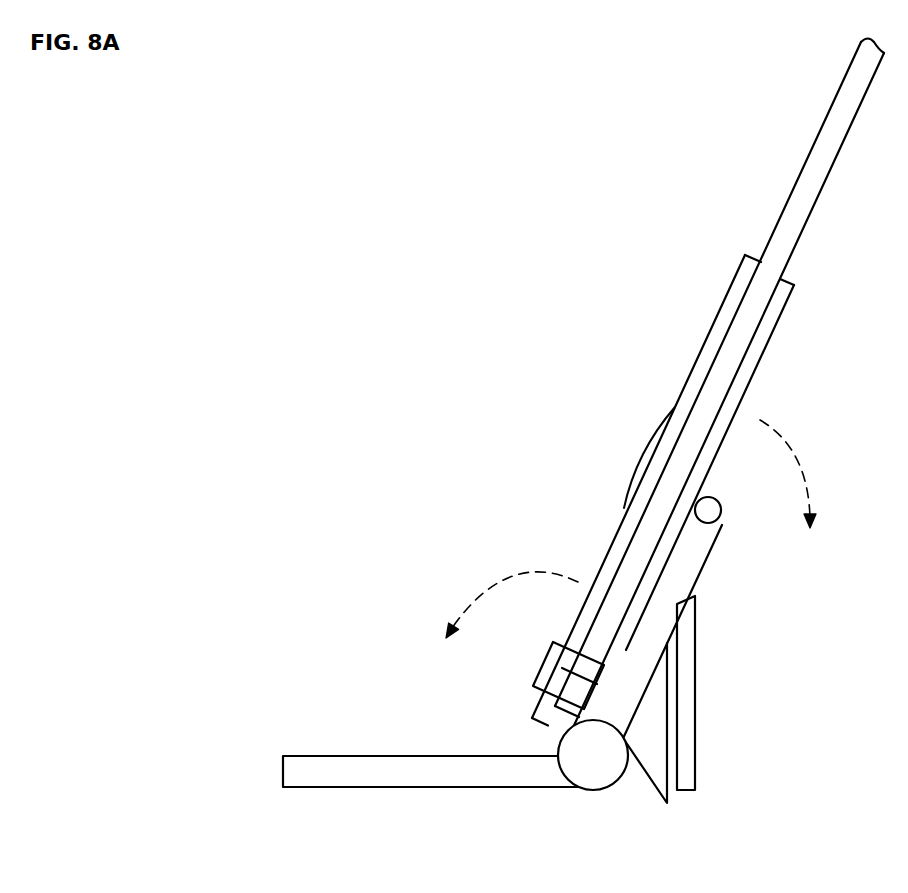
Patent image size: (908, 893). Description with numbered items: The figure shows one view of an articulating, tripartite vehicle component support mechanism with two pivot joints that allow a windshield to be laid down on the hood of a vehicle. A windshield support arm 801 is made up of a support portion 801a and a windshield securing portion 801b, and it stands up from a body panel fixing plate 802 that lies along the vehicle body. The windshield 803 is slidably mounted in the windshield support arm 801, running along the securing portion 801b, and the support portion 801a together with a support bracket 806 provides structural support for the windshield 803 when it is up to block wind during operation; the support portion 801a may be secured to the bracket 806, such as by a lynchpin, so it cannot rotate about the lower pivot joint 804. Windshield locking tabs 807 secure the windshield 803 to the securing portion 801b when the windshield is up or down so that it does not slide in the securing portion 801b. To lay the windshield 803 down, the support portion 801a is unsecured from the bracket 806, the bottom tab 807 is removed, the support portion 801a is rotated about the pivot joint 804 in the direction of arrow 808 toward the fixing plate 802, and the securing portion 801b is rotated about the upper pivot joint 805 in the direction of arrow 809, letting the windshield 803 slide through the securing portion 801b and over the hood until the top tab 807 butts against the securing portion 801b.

The windshield support arm 801 is at (697, 421).
The support portion 801a is at (700, 576).
The windshield securing portion 801b is at (705, 320).
The body panel fixing plate 802 is at (318, 756).
The windshield 803 is at (780, 208).
The pivot joint 804 is at (612, 767).
The pivot joint 805 is at (720, 500).
The support bracket 806 is at (698, 682).
The windshield locking tab 807 is at (548, 668).
The arrow 808 is at (495, 578).
The arrow 809 is at (800, 438).